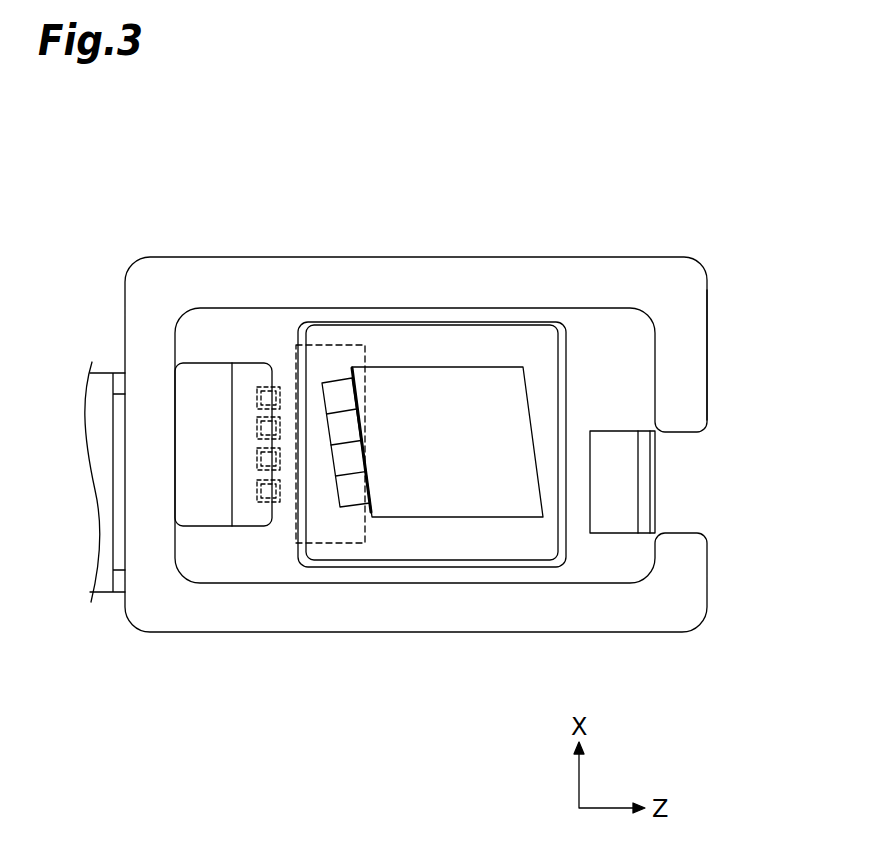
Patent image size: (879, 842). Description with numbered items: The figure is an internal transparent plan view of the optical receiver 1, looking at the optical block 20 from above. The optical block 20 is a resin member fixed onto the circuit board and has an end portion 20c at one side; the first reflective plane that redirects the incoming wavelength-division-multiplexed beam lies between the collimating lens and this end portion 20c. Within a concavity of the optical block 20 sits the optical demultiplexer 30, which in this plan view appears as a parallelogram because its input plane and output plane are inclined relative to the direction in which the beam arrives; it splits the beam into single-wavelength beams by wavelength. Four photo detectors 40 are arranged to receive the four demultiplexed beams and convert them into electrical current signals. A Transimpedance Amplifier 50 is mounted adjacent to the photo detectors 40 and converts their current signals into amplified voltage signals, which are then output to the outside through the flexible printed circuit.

The optical receiver 1 is at (446, 427).
The optical block 20 is at (692, 258).
The end portion 20c is at (706, 335).
The optical demultiplexer 30 is at (452, 367).
The photo detectors 40 is at (258, 408).
The Transimpedance Amplifier (TIA) 50 is at (366, 528).